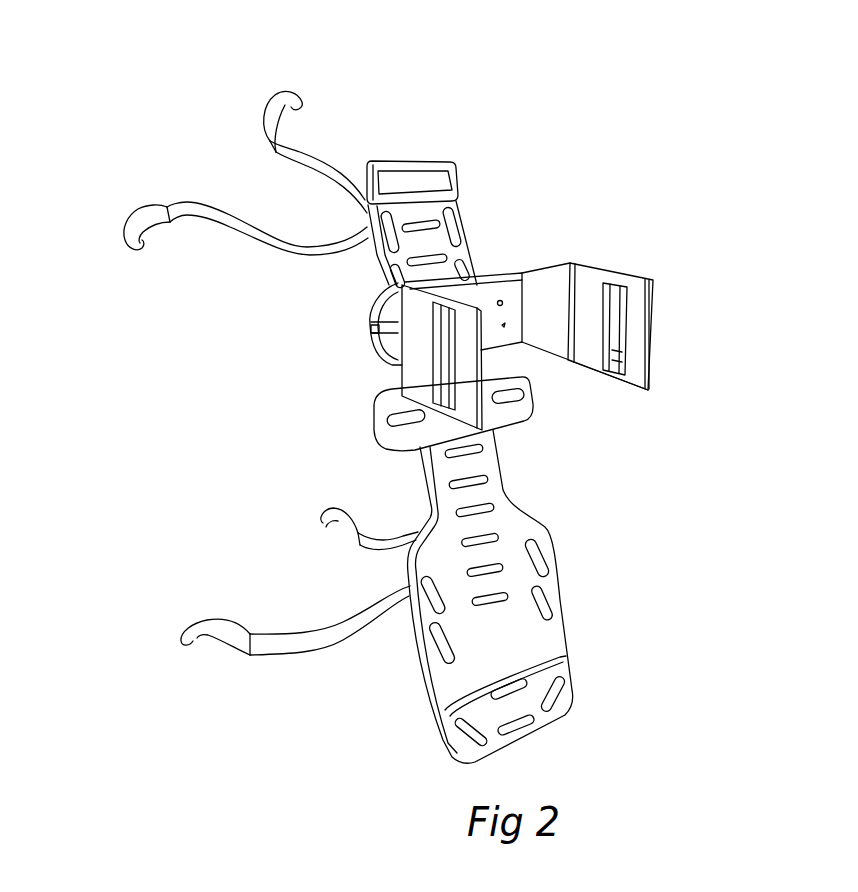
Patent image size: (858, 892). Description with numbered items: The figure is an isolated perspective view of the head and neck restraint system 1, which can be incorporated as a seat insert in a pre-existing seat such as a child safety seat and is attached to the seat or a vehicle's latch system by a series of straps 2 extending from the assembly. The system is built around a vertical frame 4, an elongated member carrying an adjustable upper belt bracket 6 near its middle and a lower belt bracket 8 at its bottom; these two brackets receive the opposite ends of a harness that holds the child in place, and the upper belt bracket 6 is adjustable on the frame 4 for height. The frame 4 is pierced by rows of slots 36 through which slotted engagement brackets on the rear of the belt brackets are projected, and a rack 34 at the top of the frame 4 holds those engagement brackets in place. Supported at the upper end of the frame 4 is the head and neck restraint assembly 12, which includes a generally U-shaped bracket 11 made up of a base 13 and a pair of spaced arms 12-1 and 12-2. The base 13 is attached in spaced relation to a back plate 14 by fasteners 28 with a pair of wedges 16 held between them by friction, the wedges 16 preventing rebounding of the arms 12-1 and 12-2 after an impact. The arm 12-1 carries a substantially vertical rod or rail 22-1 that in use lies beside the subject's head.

The head and neck restraint system 1 is at (634, 520).
The straps 2 is at (333, 150).
The vertical frame 4 is at (520, 532).
The adjustable upper belt bracket 6 is at (391, 437).
The lower belt bracket 8 is at (560, 672).
The U-shaped bracket 11 is at (655, 373).
The head and neck restraint assembly 12 is at (594, 277).
The arm 12-1 is at (633, 305).
The arm 12-2 is at (460, 373).
The base 13 is at (507, 313).
The back plate 14 is at (372, 303).
The wedges 16 is at (372, 337).
The rod or rail 22-1 is at (611, 357).
The fasteners 28 is at (500, 302).
The rack 34 is at (453, 160).
The slots 36 is at (452, 218).